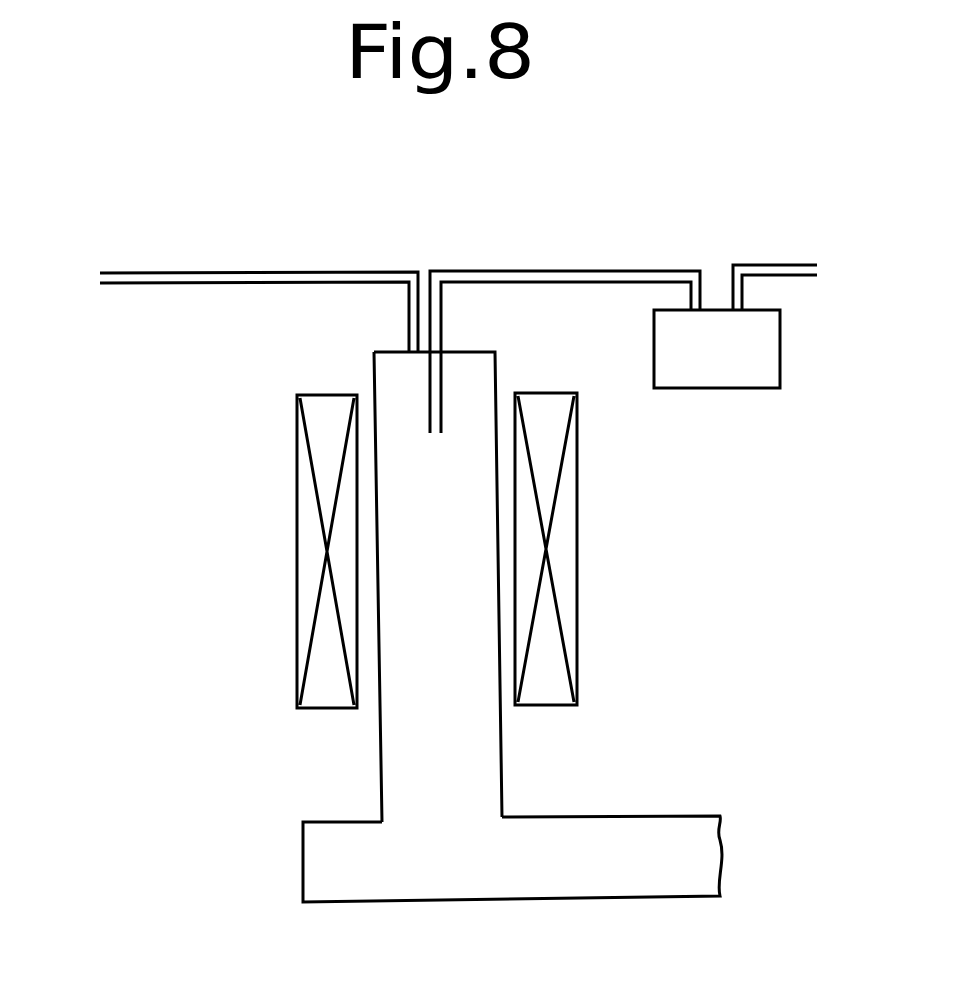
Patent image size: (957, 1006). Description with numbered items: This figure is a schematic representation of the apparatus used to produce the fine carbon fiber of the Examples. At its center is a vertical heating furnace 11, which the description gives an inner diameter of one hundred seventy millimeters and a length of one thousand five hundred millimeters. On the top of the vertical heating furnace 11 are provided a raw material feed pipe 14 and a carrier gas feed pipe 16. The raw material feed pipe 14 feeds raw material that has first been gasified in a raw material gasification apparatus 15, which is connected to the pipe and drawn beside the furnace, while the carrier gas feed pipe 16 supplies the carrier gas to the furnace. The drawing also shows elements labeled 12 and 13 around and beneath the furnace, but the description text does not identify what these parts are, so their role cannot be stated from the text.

The vertical heating furnace 11 is at (385, 380).
The heater coil 12 is at (308, 545).
The base 13 is at (563, 882).
The raw material feed pipe 14 is at (796, 273).
The raw material gasification apparatus 15 is at (752, 375).
The carrier gas feed pipe 16 is at (238, 302).